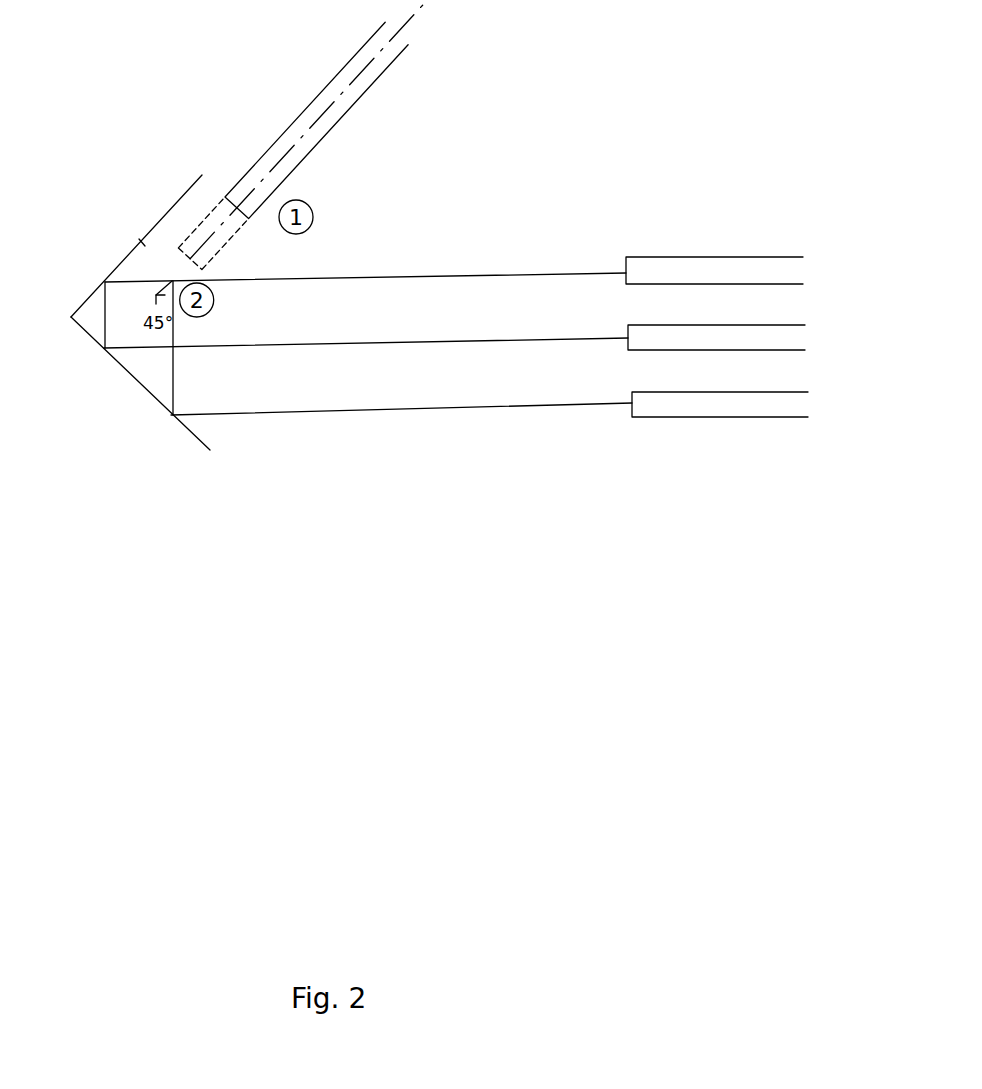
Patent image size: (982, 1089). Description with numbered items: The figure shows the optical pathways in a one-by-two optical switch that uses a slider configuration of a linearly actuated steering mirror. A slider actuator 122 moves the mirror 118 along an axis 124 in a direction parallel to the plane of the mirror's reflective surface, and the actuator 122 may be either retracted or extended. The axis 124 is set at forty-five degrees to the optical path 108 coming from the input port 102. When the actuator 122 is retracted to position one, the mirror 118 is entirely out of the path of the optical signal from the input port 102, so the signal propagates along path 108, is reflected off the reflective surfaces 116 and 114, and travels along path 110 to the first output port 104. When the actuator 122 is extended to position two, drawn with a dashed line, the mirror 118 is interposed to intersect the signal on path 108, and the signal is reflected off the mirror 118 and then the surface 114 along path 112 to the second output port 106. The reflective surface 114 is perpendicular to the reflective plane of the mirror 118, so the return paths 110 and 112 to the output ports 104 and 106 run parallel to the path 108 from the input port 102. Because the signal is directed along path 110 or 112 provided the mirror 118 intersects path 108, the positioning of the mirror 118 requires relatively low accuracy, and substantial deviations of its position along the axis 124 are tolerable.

The input port 102 is at (742, 264).
The first output port 104 is at (743, 332).
The second output port 106 is at (745, 398).
The path 108 is at (365, 267).
The path 110 is at (366, 333).
The path 112 is at (401, 400).
The reflective surface 114 is at (147, 403).
The reflective surface 116 is at (122, 252).
The mirror 118 is at (182, 276).
The slider actuator 122 is at (324, 120).
The axis 124 is at (416, 13).